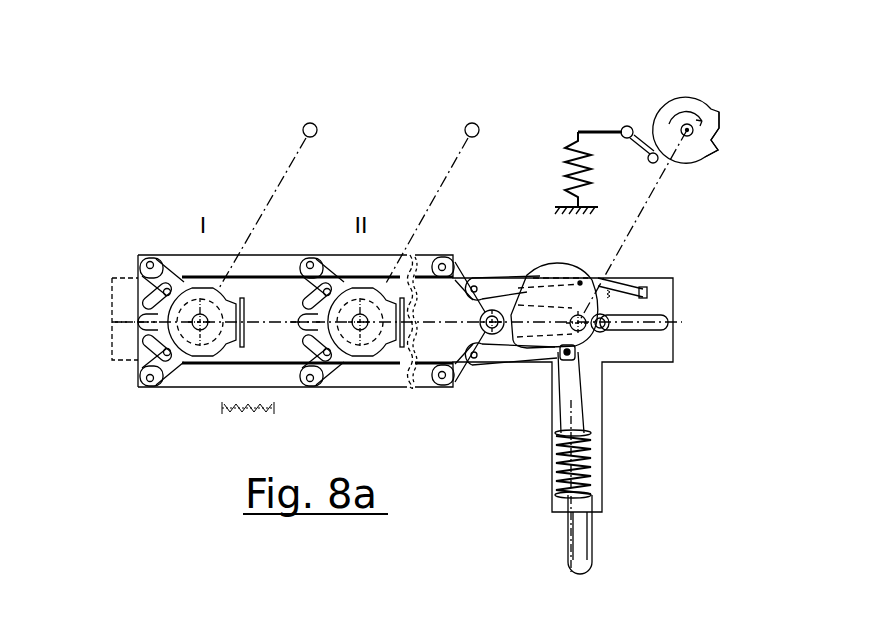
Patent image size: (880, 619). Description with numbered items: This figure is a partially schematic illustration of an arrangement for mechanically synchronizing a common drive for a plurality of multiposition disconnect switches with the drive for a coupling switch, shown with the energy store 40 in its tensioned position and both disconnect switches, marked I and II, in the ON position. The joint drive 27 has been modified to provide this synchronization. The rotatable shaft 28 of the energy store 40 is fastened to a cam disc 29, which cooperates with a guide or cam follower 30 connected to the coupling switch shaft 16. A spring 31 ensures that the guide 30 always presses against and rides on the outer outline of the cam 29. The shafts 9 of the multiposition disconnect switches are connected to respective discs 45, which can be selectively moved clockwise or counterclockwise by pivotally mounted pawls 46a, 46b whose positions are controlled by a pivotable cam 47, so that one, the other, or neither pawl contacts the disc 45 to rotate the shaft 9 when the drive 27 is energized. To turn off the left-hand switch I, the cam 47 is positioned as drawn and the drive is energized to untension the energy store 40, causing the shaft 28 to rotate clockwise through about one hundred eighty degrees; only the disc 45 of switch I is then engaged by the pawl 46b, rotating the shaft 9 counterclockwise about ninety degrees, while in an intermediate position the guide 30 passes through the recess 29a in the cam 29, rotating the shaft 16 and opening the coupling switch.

The shaft 9 is at (466, 127).
The coupling switch shaft 16 is at (623, 128).
The joint drive 27 is at (620, 417).
The rotatable shaft 28 is at (707, 150).
The cam disc 29 is at (700, 108).
The recess 29a is at (713, 135).
The guide 30 is at (645, 150).
The spring 31 is at (565, 167).
The energy store 40 is at (587, 463).
The disc 45 is at (199, 352).
The pawl 46a is at (143, 310).
The pawl 46b is at (142, 340).
The pivotable cam 47 is at (147, 330).